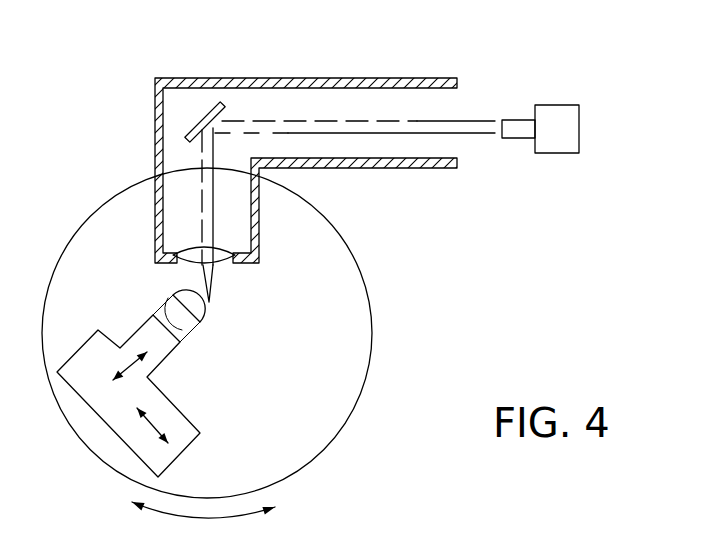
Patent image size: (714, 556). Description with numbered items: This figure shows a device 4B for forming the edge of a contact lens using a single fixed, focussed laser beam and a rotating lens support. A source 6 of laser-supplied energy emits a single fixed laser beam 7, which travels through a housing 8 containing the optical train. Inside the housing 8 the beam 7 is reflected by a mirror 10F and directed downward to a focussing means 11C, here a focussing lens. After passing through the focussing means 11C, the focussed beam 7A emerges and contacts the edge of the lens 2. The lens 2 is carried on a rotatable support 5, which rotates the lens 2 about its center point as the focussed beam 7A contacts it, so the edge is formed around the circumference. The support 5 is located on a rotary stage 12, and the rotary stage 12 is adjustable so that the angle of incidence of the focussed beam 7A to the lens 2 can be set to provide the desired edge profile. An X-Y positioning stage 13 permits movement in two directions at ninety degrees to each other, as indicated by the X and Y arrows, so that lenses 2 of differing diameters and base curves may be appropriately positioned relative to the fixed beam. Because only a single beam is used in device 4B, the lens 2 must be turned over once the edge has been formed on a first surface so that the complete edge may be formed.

The housing 8 is at (378, 79).
The source of laser-supplied energy 6 is at (545, 105).
The laser beam 7 is at (427, 120).
The mirror 10F is at (184, 128).
The focussing means 11C is at (228, 266).
The focussed beam 7A is at (213, 287).
The lens 2 is at (181, 285).
The rotatable support 5 is at (196, 328).
The X-Y positioning stage 13 is at (163, 388).
The rotary stage 12 is at (373, 332).
The device 4B is at (54, 237).